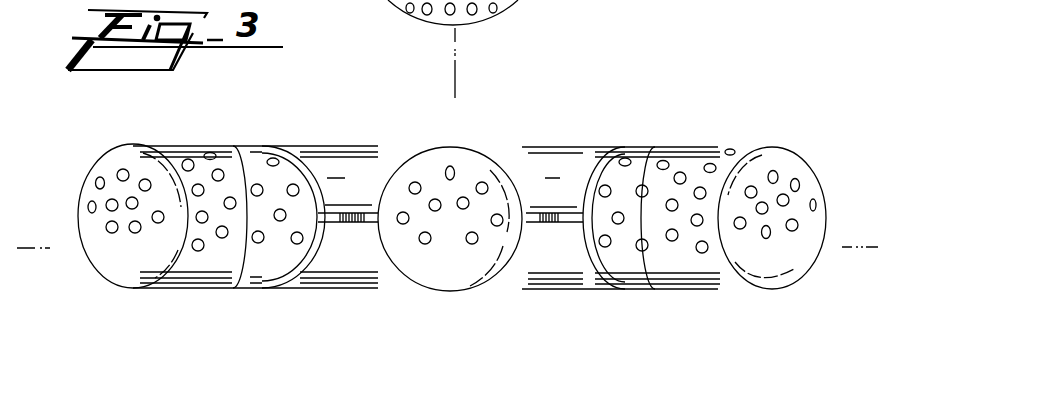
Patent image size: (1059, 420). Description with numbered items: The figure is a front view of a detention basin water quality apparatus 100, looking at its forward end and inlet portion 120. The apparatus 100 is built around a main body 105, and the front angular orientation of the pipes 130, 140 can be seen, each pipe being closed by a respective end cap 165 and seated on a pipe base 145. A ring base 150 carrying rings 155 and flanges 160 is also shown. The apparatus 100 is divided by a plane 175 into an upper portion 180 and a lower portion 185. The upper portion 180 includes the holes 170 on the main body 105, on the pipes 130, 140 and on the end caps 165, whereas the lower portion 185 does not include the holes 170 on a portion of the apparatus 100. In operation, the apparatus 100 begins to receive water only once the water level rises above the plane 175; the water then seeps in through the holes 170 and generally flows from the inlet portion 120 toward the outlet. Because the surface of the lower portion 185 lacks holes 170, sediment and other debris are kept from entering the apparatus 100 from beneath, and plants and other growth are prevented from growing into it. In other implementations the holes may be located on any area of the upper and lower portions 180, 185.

The detention basin water quality apparatus 100 is at (71, 161).
The main body 105 is at (500, 145).
The inlet portion 120 is at (664, 304).
The pipe 130 is at (230, 146).
The pipe 140 is at (661, 150).
The pipe base 145 is at (382, 275).
The ring base 150 is at (598, 145).
The ring 155 is at (450, 193).
The flange 160 is at (343, 222).
The end cap 165 is at (110, 248).
The hole 170 is at (188, 159).
The plane 175 is at (448, 234).
The upper portion 180 is at (826, 128).
The lower portion 185 is at (824, 288).